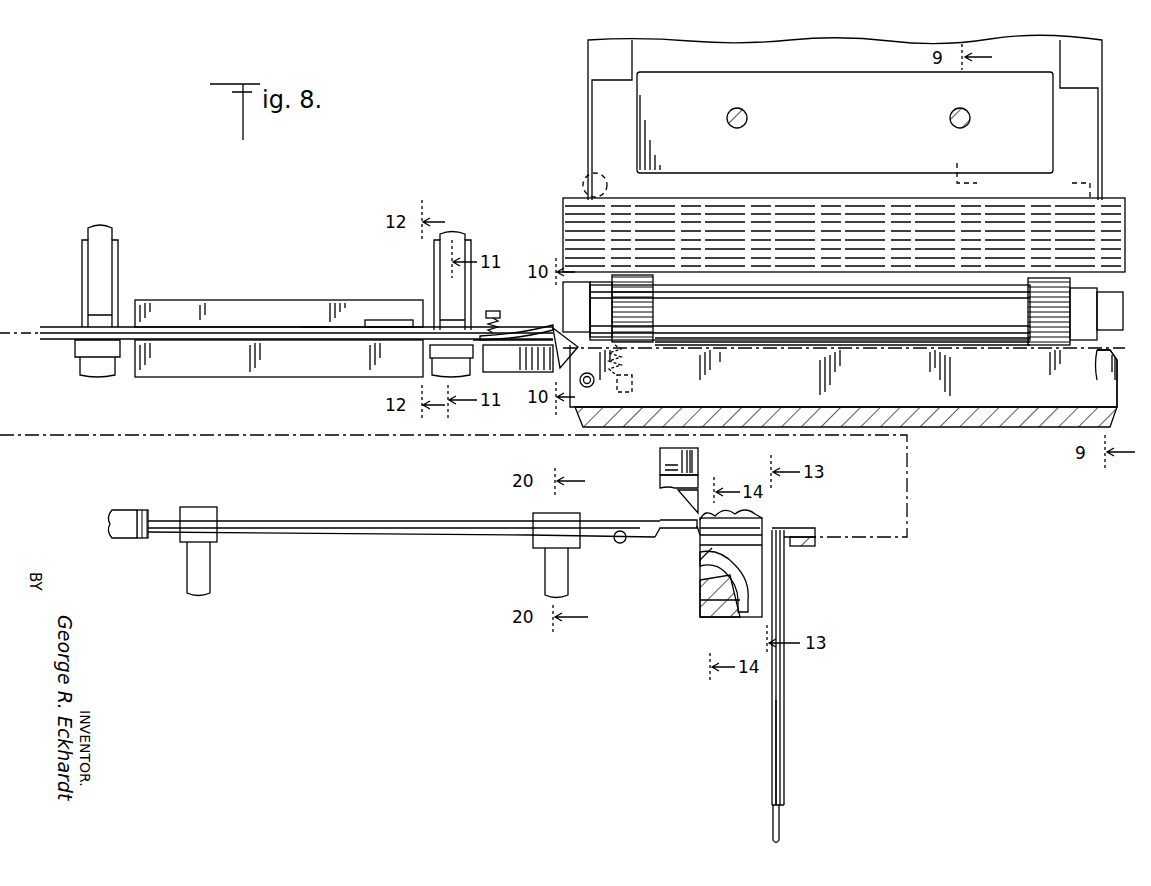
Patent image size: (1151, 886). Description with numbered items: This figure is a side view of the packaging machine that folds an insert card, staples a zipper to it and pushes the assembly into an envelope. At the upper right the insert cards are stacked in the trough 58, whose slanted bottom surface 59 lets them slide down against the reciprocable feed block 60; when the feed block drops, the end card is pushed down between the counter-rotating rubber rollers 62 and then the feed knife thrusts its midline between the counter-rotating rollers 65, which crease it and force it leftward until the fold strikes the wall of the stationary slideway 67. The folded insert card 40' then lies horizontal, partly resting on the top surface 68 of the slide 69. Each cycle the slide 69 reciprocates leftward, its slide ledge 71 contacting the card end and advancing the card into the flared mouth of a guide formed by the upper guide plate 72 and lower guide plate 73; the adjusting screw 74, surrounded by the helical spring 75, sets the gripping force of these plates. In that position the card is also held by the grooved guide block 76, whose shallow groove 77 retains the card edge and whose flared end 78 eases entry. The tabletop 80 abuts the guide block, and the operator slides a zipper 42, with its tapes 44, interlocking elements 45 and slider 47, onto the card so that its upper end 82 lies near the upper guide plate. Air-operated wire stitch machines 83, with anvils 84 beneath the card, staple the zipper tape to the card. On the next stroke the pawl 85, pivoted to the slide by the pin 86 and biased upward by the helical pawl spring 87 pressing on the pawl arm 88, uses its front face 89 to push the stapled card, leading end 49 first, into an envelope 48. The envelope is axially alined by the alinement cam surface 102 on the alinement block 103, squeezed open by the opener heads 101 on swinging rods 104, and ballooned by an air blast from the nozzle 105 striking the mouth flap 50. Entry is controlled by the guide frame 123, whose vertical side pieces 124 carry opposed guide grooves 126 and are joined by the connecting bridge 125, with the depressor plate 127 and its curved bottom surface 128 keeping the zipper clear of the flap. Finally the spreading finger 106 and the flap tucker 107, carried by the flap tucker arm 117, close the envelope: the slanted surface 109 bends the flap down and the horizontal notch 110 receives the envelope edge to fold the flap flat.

The trough 58 is at (1104, 134).
The bottom surface 59 is at (583, 181).
The feed block 60 is at (856, 128).
The rubber rollers 62 is at (562, 219).
The counter-rotating rollers 65 is at (832, 322).
The folded insert card 40' is at (842, 323).
The top surface 68 is at (925, 347).
The pawl 85 is at (566, 345).
The slide 69 is at (982, 398).
The stationary slideway 67 is at (1020, 427).
The slide ledge 71 is at (1106, 351).
The pin 86 is at (578, 390).
The helical pawl spring 87 is at (625, 360).
The pawl arm 88 is at (634, 385).
The wire stitch machine 83 is at (120, 262).
The anvils 84 is at (80, 352).
The grooved guide block 76 is at (214, 299).
The shallow groove 77 is at (228, 340).
The slider 47 is at (398, 318).
The zipper 42 is at (310, 320).
The flared end 78 is at (428, 350).
The upper end 82 is at (476, 340).
The lower guide plate 73 is at (495, 372).
The front face 89 is at (545, 350).
The upper guide plate 72 is at (506, 334).
The adjusting screw 74 is at (496, 310).
The helical spring 75 is at (500, 326).
The alinement block 103 is at (118, 508).
The alinement cam surface 102 is at (148, 510).
The envelope 48 is at (366, 515).
The mouth flap 50 is at (672, 516).
The opener heads 101 is at (212, 506).
The rods 104 is at (210, 572).
The spreading finger 106 is at (618, 545).
The flap tucker 107 is at (660, 456).
The slanted surface 109 is at (672, 490).
The flap tucker arm 117 is at (700, 458).
The horizontal notch 110 is at (700, 486).
The leading end 49 is at (745, 528).
The curved bottom surface 128 is at (748, 518).
The guide grooves 126 is at (760, 528).
The side pieces 124 is at (745, 566).
The guide frame 123 is at (700, 592).
The connecting bridge 125 is at (700, 612).
The depressor plate 127 is at (700, 530).
The nozzle 105 is at (700, 556).
The tabletop 80 is at (816, 545).
The interlocking elements 45 is at (772, 746).
The tapes 44 is at (781, 832).